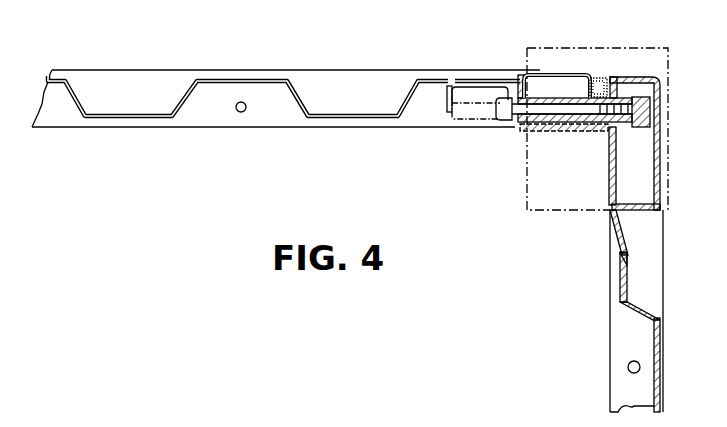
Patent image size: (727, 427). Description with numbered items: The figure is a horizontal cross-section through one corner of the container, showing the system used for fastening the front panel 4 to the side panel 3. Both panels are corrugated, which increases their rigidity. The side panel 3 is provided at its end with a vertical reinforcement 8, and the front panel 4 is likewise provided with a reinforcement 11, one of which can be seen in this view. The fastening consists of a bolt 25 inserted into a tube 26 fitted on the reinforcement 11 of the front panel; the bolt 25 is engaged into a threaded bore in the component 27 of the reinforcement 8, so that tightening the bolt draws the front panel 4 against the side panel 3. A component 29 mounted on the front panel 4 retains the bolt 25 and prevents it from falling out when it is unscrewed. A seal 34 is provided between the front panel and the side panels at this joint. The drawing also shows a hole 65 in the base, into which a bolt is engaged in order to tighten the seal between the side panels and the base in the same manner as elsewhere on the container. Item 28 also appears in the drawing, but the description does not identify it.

The side panel 3 is at (640, 252).
The front panel 4 is at (232, 79).
The reinforcement 8 is at (656, 172).
The reinforcement 11 is at (563, 84).
The bolt 25 is at (528, 128).
The tube 26 is at (537, 98).
The component 27 is at (641, 99).
The bolt head 28 is at (496, 109).
The component 29 is at (446, 98).
The seal 34 is at (602, 79).
The hole 65 is at (235, 114).